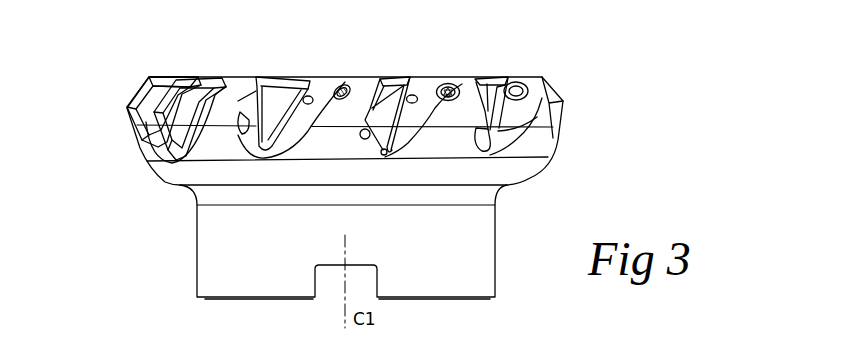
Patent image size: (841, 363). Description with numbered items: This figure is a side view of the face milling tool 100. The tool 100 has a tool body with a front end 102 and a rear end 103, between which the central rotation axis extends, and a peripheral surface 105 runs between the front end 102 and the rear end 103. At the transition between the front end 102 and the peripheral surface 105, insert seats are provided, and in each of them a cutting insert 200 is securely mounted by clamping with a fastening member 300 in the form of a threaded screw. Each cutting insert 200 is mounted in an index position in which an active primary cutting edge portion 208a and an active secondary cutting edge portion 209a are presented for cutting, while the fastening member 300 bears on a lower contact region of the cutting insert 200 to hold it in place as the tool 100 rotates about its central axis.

The face milling tool 100 is at (564, 66).
The front end 102 is at (358, 78).
The rear end 103 is at (437, 298).
The peripheral surface 105 is at (455, 250).
The cutting insert 200 is at (198, 86).
The active primary cutting edge portion 208a is at (141, 92).
The active secondary cutting edge portion 209a is at (155, 77).
The fastening member 300 is at (445, 85).